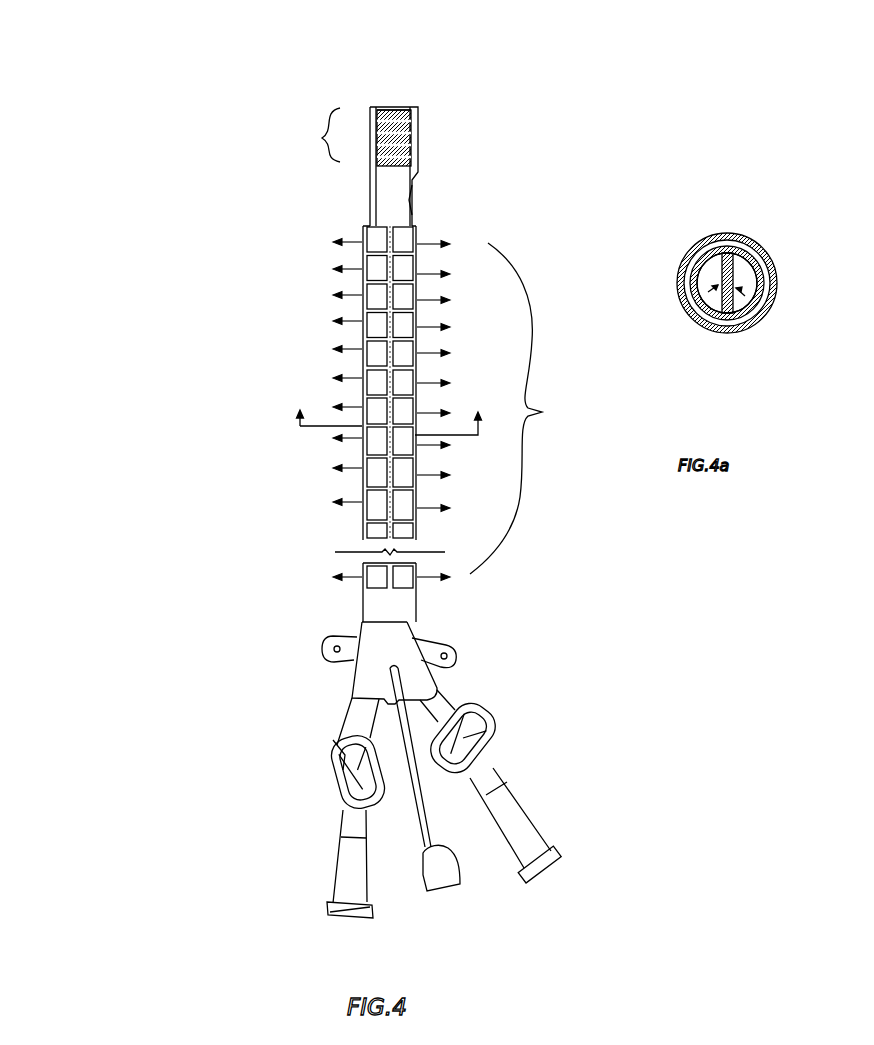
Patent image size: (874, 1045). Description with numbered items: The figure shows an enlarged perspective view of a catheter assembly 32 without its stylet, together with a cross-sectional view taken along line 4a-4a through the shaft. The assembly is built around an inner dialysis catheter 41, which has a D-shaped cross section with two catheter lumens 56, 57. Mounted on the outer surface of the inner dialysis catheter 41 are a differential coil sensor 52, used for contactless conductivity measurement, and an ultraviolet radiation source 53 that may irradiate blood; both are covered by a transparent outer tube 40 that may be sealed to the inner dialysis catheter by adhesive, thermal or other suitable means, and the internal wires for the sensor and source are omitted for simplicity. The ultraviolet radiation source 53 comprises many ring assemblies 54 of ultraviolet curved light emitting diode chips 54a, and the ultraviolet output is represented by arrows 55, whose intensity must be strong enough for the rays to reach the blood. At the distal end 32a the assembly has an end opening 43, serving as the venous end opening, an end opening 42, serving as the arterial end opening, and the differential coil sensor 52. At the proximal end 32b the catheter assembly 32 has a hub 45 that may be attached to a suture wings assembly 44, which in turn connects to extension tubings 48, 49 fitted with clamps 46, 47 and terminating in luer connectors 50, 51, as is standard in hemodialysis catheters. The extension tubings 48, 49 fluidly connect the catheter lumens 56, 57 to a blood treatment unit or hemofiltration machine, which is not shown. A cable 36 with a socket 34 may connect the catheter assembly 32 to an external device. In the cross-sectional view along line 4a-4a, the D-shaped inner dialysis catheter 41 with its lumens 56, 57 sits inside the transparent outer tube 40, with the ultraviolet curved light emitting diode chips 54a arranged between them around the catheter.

In FIG. 4, the catheter assembly 32 is at (171, 712).
In FIG. 4, the distal end 32a is at (137, 138).
In FIG. 4, the proximal portion of catheter assembly 32b is at (565, 705).
In FIG. 4, the socket 34 is at (432, 894).
In FIG. 4, the cable 36 is at (428, 833).
In FIG. 4, the transparent outer tube 40 is at (360, 310).
In FIG. 4A, the transparent outer tube 40 is at (762, 252).
In FIG. 4, the inner dialysis catheter 41 is at (372, 195).
In FIG. 4A, the inner dialysis catheter 41 is at (770, 270).
In FIG. 4, the end opening 42 is at (410, 220).
In FIG. 4, the end opening 43 is at (395, 105).
In FIG. 4, the suture wings assembly 44 is at (455, 645).
In FIG. 4, the hub 45 is at (440, 678).
In FIG. 4, the clamp 46 is at (480, 727).
In FIG. 4, the clamp 47 is at (337, 768).
In FIG. 4, the extension tubing 48 is at (500, 790).
In FIG. 4, the extension tubing 49 is at (345, 815).
In FIG. 4, the luer connector 50 is at (538, 830).
In FIG. 4, the luer connector 51 is at (338, 868).
In FIG. 4, the differential coil sensor 52 is at (322, 138).
In FIG. 4, the ultraviolet radiation source 53 is at (544, 413).
In FIG. 4, the ring assembly 54 is at (367, 270).
In FIG. 4A, the ultraviolet curved light emitting diode chip 54a is at (726, 235).
In FIG. 4, the arrows 55 is at (352, 263).
In FIG. 4A, the catheter lumen 56 is at (770, 325).
In FIG. 4A, the catheter lumen 57 is at (690, 327).
In FIG. 4, the line 4a- 4a is at (389, 412).